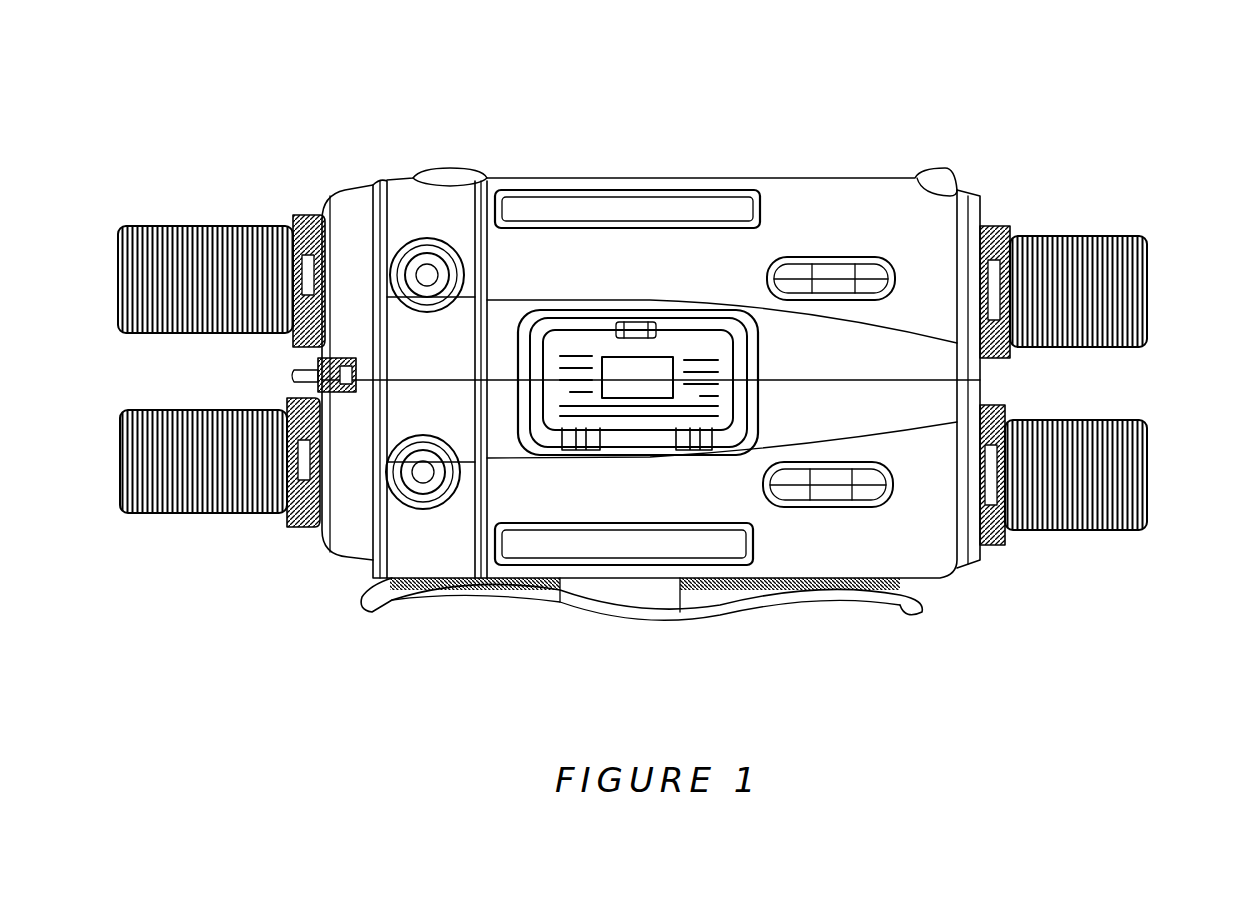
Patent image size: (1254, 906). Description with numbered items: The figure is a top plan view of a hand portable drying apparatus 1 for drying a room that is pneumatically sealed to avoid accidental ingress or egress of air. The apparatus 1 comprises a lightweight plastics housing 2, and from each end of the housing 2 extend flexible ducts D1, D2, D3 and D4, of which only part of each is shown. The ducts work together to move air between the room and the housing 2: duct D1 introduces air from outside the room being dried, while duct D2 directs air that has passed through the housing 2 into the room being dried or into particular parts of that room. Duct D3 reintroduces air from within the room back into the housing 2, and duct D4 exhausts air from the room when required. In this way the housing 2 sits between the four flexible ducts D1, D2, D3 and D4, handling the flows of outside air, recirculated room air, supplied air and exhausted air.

The drying apparatus 1 is at (757, 108).
The plastics housing 2 is at (987, 190).
The flexible duct D1 is at (200, 520).
The flexible duct D2 is at (1080, 530).
The flexible duct D3 is at (1105, 230).
The flexible duct D4 is at (213, 222).